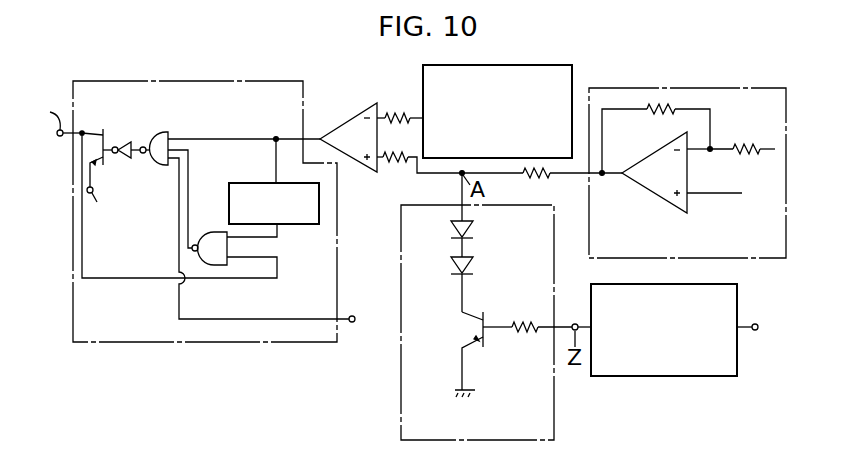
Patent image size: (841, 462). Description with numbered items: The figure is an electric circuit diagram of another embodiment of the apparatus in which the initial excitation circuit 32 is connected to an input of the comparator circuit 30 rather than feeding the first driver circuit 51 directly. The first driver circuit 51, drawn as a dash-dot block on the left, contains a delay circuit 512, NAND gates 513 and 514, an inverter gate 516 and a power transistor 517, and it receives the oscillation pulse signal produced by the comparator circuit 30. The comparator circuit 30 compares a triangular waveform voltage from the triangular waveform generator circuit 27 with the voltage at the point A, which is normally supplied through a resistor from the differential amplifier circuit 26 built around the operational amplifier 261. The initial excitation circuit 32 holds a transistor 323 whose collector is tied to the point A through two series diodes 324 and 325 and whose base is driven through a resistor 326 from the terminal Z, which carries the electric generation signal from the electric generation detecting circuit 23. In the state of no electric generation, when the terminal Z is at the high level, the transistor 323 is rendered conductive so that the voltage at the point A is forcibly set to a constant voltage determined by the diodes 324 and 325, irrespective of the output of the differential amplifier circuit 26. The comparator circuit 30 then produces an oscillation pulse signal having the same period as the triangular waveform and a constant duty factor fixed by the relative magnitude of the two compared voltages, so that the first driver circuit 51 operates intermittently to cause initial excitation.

The first driver circuit 51 is at (193, 343).
The power transistor 517 is at (110, 114).
The inverter gate 516 is at (125, 141).
The NAND gate 514 is at (169, 133).
The NAND gate 513 is at (212, 232).
The delay circuit 512 is at (305, 224).
The comparator circuit 30 is at (346, 123).
The triangular waveform generator circuit 27 is at (529, 65).
The differential amplifier circuit 26 is at (767, 88).
The operational amplifier 261 is at (635, 182).
The initial excitation circuit 32 is at (400, 358).
The diode 324 is at (474, 228).
The diode 325 is at (474, 263).
The transistor 323 is at (480, 329).
The resistor 326 is at (535, 322).
The electric generation detecting circuit 23 is at (705, 377).